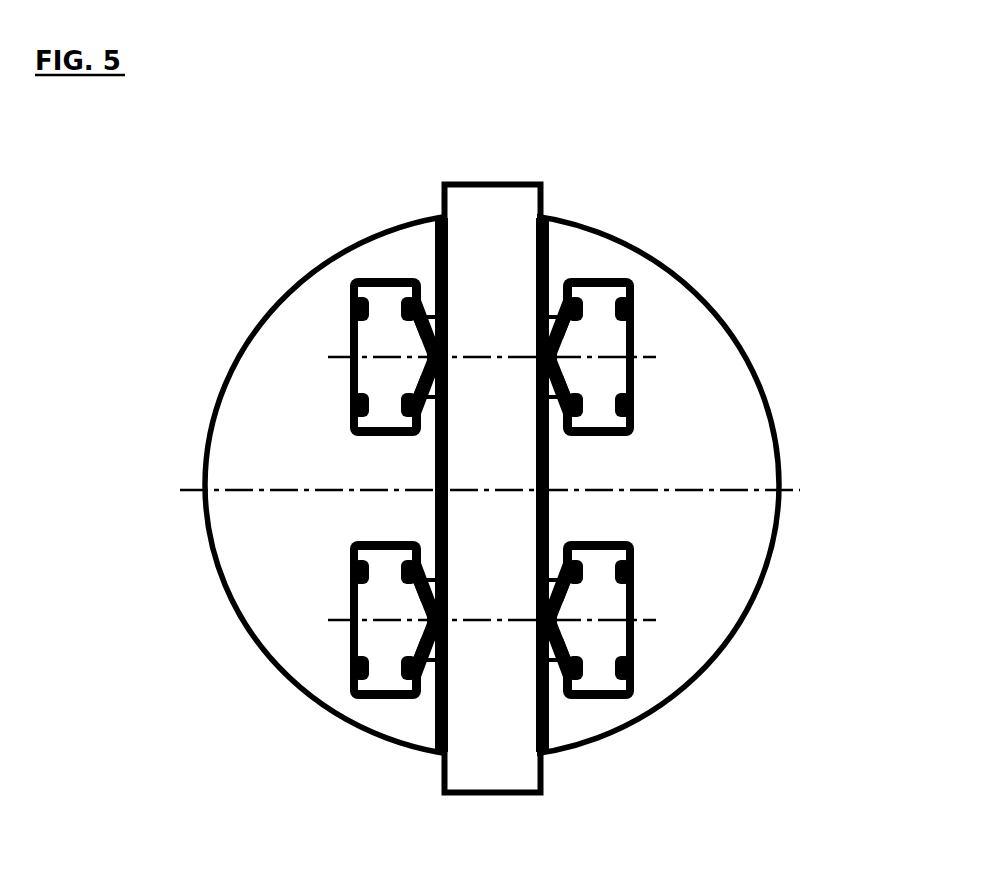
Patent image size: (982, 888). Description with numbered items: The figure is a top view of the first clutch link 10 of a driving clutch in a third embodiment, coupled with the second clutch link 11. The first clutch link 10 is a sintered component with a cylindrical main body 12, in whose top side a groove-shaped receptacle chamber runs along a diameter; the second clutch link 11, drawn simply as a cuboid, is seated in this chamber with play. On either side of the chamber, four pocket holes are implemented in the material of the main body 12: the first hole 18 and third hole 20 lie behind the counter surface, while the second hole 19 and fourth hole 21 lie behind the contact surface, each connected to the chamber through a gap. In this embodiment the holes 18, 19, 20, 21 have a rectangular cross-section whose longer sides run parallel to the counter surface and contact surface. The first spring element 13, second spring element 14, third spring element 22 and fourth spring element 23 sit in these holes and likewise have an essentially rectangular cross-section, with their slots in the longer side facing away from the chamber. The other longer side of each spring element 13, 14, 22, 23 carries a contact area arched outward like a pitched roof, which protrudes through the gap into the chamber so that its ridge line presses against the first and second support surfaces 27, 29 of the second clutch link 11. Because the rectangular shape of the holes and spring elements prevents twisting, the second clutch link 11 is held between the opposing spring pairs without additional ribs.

The first clutch link 10 is at (479, 444).
The second clutch link 11 is at (432, 158).
The main body 12 is at (381, 230).
The first spring element 13 is at (414, 649).
The second spring element 14 is at (578, 385).
The first hole 18 is at (357, 605).
The second hole 19 is at (627, 342).
The third hole 20 is at (357, 344).
The fourth hole 21 is at (627, 603).
The third spring element 22 is at (414, 386).
The fourth spring element 23 is at (578, 647).
The first support surface 27 is at (440, 754).
The second support surface 29 is at (548, 753).